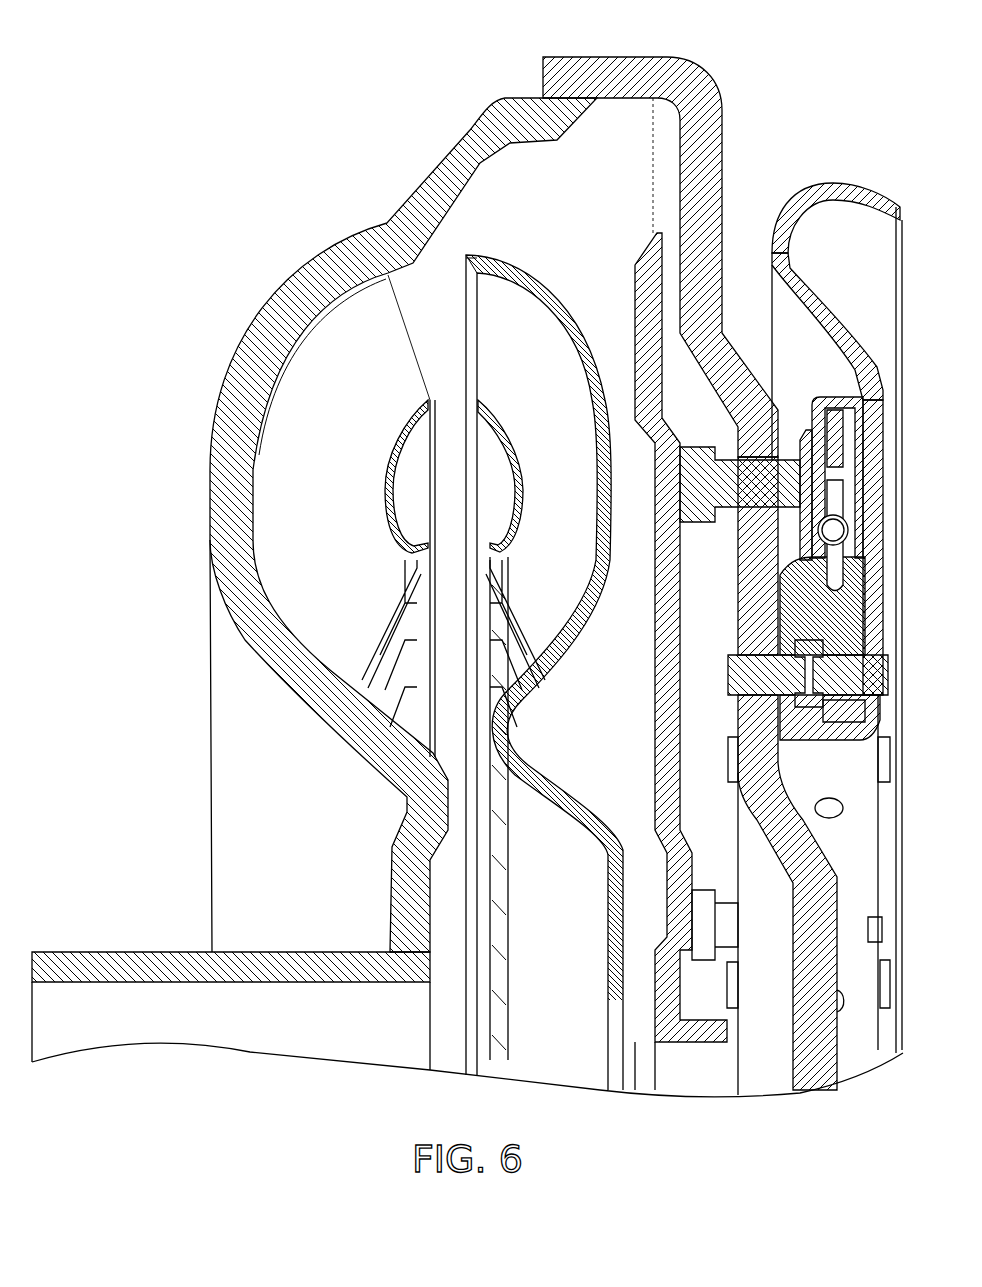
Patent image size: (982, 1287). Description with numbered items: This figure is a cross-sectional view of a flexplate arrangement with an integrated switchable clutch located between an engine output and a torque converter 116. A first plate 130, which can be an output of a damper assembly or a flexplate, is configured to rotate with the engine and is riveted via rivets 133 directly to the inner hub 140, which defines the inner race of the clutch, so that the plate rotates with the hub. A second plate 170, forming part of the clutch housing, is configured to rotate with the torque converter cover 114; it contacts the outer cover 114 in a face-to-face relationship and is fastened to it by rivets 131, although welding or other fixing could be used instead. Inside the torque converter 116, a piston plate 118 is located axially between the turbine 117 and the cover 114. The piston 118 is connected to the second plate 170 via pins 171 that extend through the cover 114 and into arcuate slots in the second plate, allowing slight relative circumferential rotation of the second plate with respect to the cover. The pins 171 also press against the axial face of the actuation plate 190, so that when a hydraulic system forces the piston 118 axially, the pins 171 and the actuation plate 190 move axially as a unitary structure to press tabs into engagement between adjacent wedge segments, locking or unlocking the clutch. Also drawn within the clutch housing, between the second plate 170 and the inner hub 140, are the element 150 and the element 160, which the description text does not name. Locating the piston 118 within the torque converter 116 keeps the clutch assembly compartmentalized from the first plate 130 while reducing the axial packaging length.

The torque converter cover 114 is at (598, 68).
The torque converter 116 is at (396, 180).
The turbine 117 is at (538, 292).
The piston plate 118 is at (652, 262).
The first plate 130 is at (870, 196).
The rivets 131 is at (735, 672).
The rivets 133 is at (875, 675).
The inner hub 140 is at (855, 620).
The pin 150 is at (836, 495).
The plate member 160 is at (836, 436).
The second plate 170 is at (850, 398).
The pins 171 is at (692, 508).
The actuation plate 190 is at (805, 430).